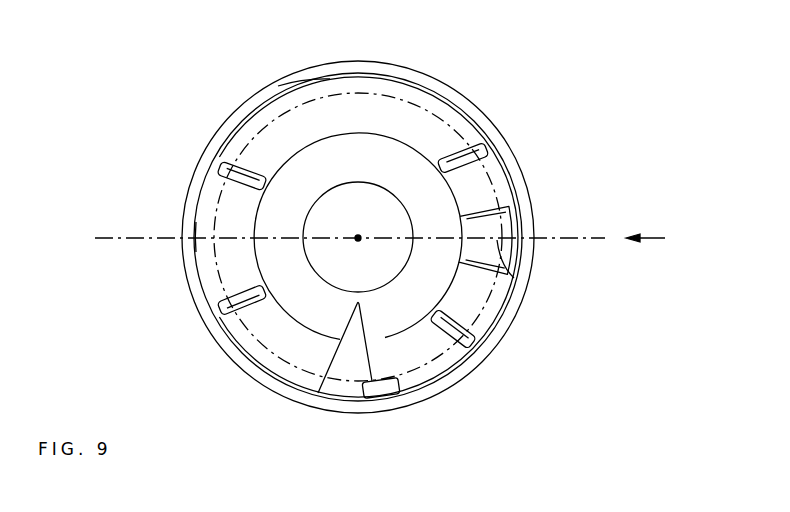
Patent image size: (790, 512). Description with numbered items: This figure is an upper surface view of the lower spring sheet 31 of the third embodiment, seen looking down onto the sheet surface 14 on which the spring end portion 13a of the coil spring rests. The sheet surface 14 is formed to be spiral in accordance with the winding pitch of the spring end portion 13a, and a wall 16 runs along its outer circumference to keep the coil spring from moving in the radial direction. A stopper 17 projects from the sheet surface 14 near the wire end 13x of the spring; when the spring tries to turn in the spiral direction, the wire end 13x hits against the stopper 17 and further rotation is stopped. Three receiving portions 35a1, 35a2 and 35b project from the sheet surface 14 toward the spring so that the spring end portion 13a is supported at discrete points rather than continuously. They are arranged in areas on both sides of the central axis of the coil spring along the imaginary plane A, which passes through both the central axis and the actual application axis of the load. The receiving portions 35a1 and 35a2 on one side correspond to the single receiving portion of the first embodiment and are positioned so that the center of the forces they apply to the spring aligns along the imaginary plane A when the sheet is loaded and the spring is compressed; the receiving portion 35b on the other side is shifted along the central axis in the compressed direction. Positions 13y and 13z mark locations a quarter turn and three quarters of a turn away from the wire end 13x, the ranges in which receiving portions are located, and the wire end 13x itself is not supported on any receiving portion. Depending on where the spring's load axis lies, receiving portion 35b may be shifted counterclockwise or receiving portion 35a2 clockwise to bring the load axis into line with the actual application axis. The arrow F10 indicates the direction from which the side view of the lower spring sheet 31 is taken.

The lower spring sheet 31 is at (186, 105).
The spring end portion 13a is at (300, 93).
The sheet surface 14 is at (411, 118).
The wall 16 is at (477, 110).
The receiving portion 35a2 is at (498, 187).
The receiving portion 35a1 is at (503, 318).
The receiving portion 35b is at (212, 206).
The position 0.25 turns from the wire end 13y is at (497, 262).
The position 0.75 turns from the wire end 13z is at (205, 246).
The wire end 13x is at (374, 384).
The stopper 17 is at (345, 386).
The imaginary plane A is at (584, 238).
The viewing direction F10 is at (664, 241).